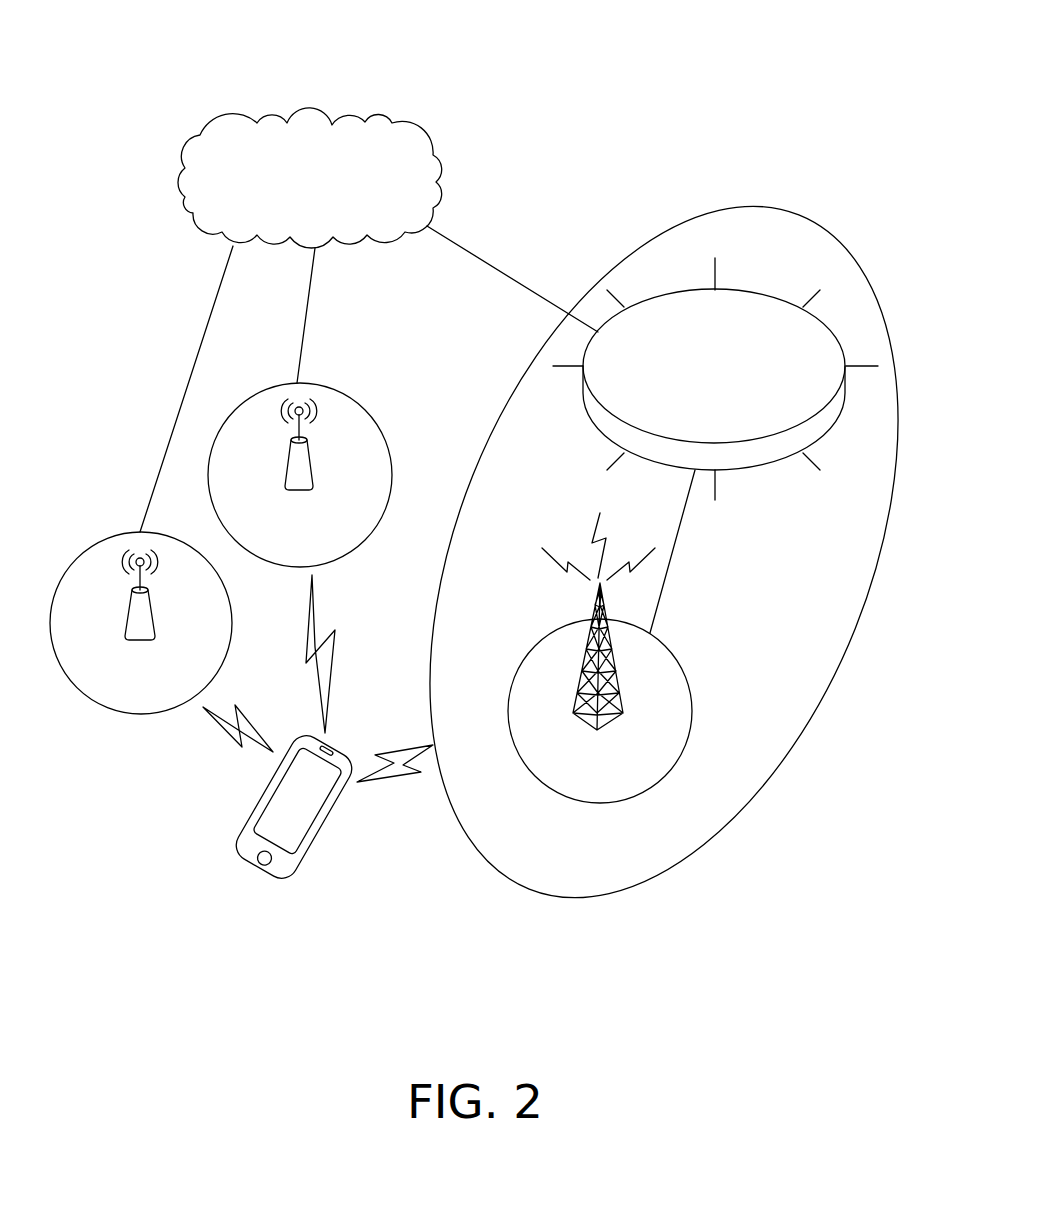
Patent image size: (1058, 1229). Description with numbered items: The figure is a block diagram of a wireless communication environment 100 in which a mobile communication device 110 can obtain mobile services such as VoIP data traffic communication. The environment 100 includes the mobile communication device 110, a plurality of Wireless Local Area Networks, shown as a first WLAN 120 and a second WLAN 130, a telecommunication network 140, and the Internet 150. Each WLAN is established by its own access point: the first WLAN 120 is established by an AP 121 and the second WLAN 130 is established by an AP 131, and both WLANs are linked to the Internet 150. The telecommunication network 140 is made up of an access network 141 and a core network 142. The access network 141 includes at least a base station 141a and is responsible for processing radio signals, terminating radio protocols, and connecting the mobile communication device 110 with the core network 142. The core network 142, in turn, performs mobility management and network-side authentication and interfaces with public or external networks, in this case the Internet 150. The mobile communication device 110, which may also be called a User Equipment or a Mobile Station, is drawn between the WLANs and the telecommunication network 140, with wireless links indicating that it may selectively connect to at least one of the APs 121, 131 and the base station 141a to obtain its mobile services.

The wireless communication environment 100 is at (558, 77).
The mobile communication device 110 is at (287, 872).
The Wireless Local Area Network 120 is at (141, 715).
The access point 121 is at (141, 642).
The Wireless Local Area Network 130 is at (341, 387).
The access point 131 is at (300, 490).
The telecommunication network 140 is at (746, 205).
The access network 141 is at (600, 803).
The base station 141a is at (612, 722).
The core network 142 is at (739, 418).
The Internet 150 is at (338, 217).